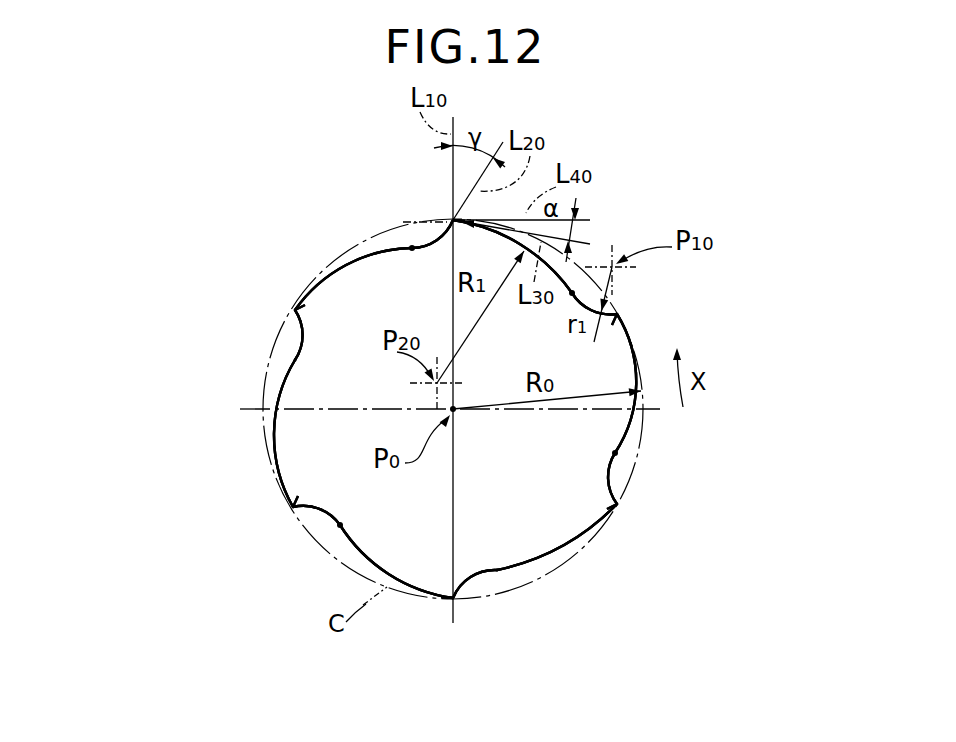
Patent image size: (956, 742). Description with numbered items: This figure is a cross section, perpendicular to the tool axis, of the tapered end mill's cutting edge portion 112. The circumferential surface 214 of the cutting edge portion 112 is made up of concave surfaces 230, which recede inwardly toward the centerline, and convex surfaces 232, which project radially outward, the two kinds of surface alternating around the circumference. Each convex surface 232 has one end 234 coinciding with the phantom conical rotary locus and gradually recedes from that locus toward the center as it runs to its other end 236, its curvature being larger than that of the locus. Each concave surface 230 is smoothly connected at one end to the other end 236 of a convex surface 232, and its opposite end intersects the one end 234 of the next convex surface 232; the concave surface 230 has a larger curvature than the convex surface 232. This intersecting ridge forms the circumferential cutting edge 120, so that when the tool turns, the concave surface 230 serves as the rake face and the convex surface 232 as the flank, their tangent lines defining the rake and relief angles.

The cutting edge portion 112 is at (292, 456).
The circumferential cutting edge 120 is at (452, 217).
The one end of the convex surface 234 is at (473, 388).
The circumferential surface 214 is at (370, 190).
The concave surface 230 is at (416, 246).
The convex surface 232 is at (346, 258).
The other end of the convex surface 236 is at (409, 252).